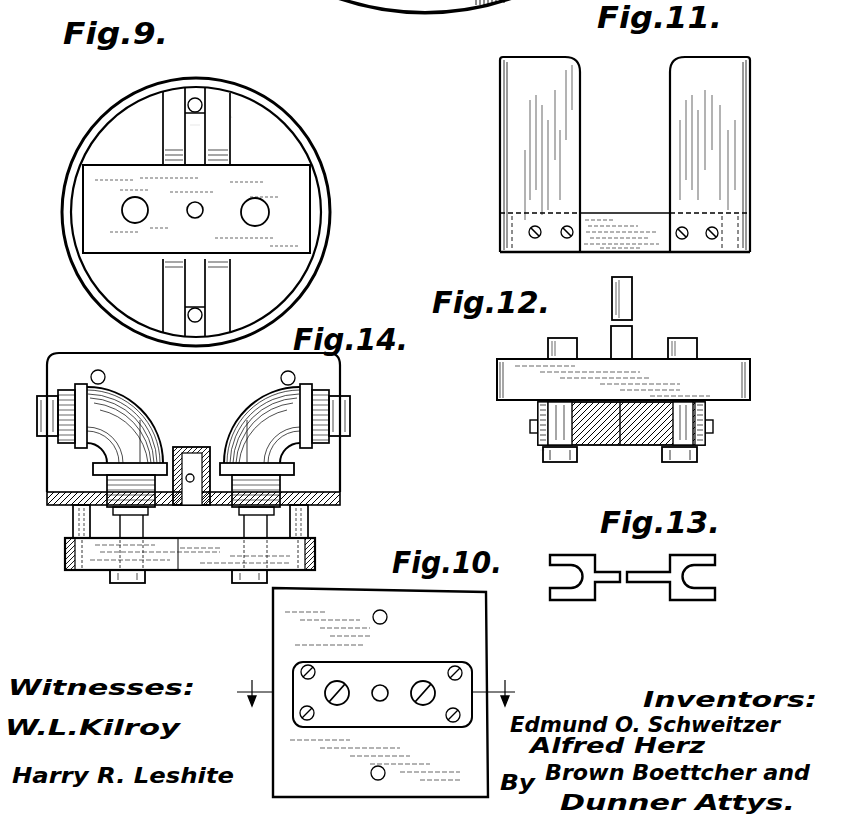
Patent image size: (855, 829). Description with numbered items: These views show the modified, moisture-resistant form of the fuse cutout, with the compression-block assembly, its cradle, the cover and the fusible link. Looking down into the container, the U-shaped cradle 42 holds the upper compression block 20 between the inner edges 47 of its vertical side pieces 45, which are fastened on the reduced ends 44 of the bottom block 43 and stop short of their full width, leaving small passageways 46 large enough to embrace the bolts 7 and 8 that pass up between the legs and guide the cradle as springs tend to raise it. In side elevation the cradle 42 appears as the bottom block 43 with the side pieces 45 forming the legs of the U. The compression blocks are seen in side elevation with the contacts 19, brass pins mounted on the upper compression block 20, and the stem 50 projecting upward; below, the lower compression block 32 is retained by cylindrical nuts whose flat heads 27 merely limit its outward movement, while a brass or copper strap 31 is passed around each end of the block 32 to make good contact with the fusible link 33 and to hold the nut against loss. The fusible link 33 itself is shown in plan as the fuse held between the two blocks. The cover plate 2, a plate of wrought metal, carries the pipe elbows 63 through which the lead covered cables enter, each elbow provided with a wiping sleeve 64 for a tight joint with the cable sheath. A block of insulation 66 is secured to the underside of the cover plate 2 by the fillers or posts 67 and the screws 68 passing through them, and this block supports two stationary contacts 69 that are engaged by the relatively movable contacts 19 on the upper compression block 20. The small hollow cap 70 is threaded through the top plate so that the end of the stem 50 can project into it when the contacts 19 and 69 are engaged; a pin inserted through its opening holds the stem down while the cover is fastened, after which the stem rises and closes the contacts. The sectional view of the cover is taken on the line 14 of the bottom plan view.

In FIG. 14, the cover plate 2 is at (325, 503).
In FIG. 9, the bolt 7 is at (194, 97).
In FIG. 9, the bolt 8 is at (200, 318).
In FIG. 10, the section line 14 is at (381, 677).
In FIG. 9, the contact 19 is at (134, 208).
In FIG. 12, the contact 19 is at (572, 333).
In FIG. 9, the upper compression block 20 is at (303, 221).
In FIG. 12, the upper compression block 20 is at (730, 378).
In FIG. 12, the flat head 27 is at (543, 455).
In FIG. 12, the strap 31 is at (538, 415).
In FIG. 12, the lower compression block 32 is at (647, 446).
In FIG. 12, the fusible link 33 is at (581, 462).
In FIG. 13, the fusible link 33 is at (611, 579).
In FIG. 9, the U-shaped cradle 42 is at (232, 118).
In FIG. 11, the U-shaped cradle 42 is at (500, 100).
In FIG. 11, the bottom block 43 is at (612, 220).
In FIG. 9, the reduced ends 44 is at (196, 128).
In FIG. 11, the reduced ends 44 is at (560, 242).
In FIG. 9, the vertical side pieces 45 is at (172, 100).
In FIG. 9, the passageways 46 is at (200, 98).
In FIG. 11, the inner edges 47 is at (670, 92).
In FIG. 12, the stem 50 is at (633, 310).
In FIG. 14, the pipe elbows 63 is at (245, 418).
In FIG. 14, the wiping sleeves 64 is at (338, 405).
In FIG. 14, the block of insulation 66 is at (318, 559).
In FIG. 10, the block of insulation 66 is at (403, 668).
In FIG. 14, the posts 67 is at (75, 522).
In FIG. 10, the screws 68 is at (450, 710).
In FIG. 14, the stationary contacts 69 is at (135, 584).
In FIG. 10, the stationary contacts 69 is at (417, 688).
In FIG. 14, the hollow cap 70 is at (192, 449).